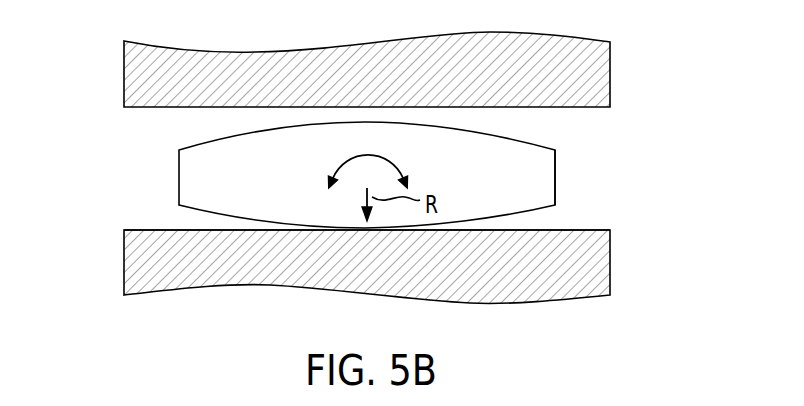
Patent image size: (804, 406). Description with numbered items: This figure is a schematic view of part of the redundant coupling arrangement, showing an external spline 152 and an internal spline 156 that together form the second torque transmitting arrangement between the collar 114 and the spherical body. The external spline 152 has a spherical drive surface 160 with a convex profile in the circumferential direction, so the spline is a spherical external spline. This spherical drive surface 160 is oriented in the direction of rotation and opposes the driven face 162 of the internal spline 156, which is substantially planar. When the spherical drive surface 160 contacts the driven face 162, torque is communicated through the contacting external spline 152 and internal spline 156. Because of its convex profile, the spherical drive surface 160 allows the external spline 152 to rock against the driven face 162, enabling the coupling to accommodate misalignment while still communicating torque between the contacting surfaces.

The collar 114 is at (505, 265).
The external spline 152 is at (190, 181).
The internal spline 156 is at (607, 177).
The spherical drive surface 160 is at (522, 212).
The driven face 162 is at (180, 230).